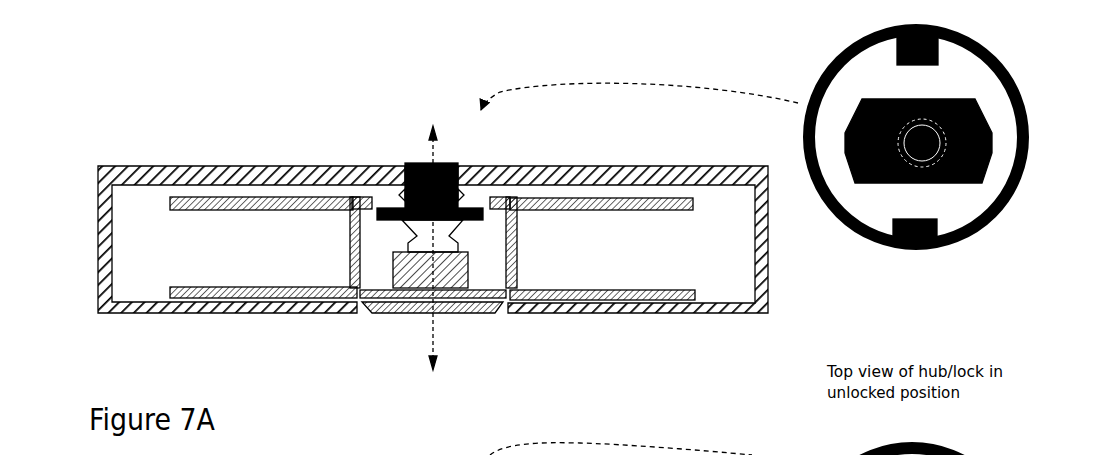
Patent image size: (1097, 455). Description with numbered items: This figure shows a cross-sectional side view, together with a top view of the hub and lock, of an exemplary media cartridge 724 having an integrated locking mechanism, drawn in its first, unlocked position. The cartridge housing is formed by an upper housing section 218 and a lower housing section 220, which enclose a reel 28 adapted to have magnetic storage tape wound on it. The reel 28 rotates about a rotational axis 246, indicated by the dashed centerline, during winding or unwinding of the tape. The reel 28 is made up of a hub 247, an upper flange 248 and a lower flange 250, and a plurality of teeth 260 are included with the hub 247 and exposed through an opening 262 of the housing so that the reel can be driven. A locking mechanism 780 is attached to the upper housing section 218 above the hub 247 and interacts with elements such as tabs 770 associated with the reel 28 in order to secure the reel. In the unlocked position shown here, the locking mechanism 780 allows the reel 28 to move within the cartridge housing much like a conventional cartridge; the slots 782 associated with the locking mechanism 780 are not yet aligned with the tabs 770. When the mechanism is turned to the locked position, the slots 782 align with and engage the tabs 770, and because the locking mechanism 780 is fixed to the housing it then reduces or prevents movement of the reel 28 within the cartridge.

The cartridge 724 is at (133, 138).
The upper housing section 218 is at (165, 168).
The upper flange 248 is at (213, 198).
The reel 28 is at (306, 182).
The tabs 770 is at (358, 205).
The locking mechanism 780 is at (396, 208).
The hub 247 is at (350, 254).
The teeth 260 is at (370, 313).
The opening 262 is at (387, 355).
The rotational axis 246 is at (435, 340).
The lower flange 250 is at (177, 298).
The lower housing section 220 is at (233, 307).
The slots 782 is at (988, 123).